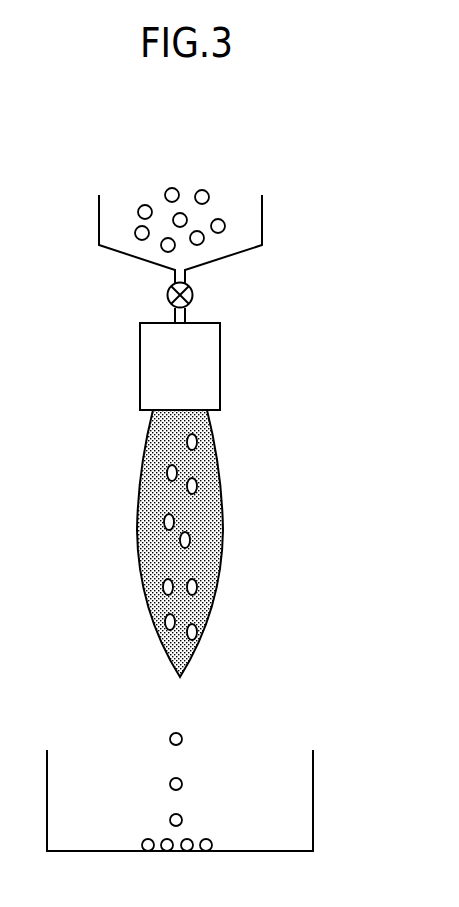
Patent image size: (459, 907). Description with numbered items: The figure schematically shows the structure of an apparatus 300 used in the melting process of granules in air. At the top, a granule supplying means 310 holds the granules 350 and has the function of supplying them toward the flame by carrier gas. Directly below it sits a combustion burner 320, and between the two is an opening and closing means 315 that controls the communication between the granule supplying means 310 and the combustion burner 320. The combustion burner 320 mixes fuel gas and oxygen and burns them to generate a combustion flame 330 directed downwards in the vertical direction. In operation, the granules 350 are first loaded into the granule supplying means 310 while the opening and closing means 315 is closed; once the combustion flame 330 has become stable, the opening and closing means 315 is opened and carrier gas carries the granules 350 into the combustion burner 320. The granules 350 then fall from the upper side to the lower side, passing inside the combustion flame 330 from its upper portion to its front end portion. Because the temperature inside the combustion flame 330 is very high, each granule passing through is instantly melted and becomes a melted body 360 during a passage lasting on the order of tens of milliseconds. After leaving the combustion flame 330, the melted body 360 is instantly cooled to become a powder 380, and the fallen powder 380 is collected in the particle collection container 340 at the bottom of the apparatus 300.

The apparatus 300 is at (415, 174).
The granule supplying means 310 is at (262, 221).
The opening and closing means 315 is at (192, 297).
The combustion burner 320 is at (220, 355).
The combustion flame 330 is at (223, 487).
The particle collection container 340 is at (313, 792).
The granules 350 is at (203, 190).
The melted body 360 is at (190, 540).
The powder 380 is at (182, 784).